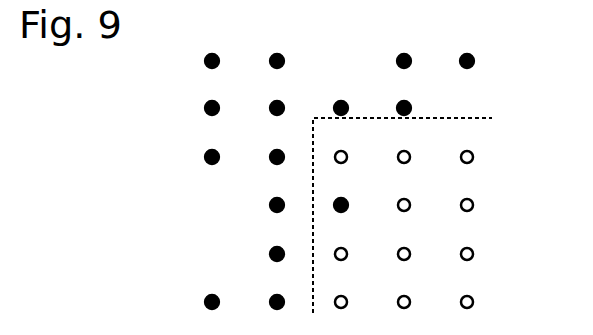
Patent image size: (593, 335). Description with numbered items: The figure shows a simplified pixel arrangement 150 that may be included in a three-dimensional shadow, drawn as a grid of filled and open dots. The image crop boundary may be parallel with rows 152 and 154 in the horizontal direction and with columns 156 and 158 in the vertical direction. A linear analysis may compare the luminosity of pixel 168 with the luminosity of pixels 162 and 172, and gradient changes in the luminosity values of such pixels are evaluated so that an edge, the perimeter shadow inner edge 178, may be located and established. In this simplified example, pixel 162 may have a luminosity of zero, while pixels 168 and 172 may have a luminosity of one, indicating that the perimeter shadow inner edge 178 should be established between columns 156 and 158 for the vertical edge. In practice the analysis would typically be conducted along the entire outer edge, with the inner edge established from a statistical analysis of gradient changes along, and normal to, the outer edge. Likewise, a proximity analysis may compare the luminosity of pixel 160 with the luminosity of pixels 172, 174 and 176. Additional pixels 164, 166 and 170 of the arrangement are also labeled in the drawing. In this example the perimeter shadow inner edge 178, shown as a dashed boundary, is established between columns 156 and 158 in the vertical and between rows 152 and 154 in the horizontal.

The pixel arrangement 150 is at (436, 44).
The row 152 is at (206, 111).
The row 154 is at (206, 161).
The column 156 is at (273, 54).
The column 158 is at (337, 54).
The pixel 160 is at (345, 198).
The pixel 162 is at (275, 152).
The pixel 164 is at (275, 200).
The pixel 166 is at (276, 249).
The pixel 168 is at (345, 151).
The pixel 170 is at (345, 247).
The pixel 172 is at (408, 151).
The pixel 174 is at (408, 199).
The pixel 176 is at (408, 247).
The perimeter shadow inner edge 178 is at (484, 116).